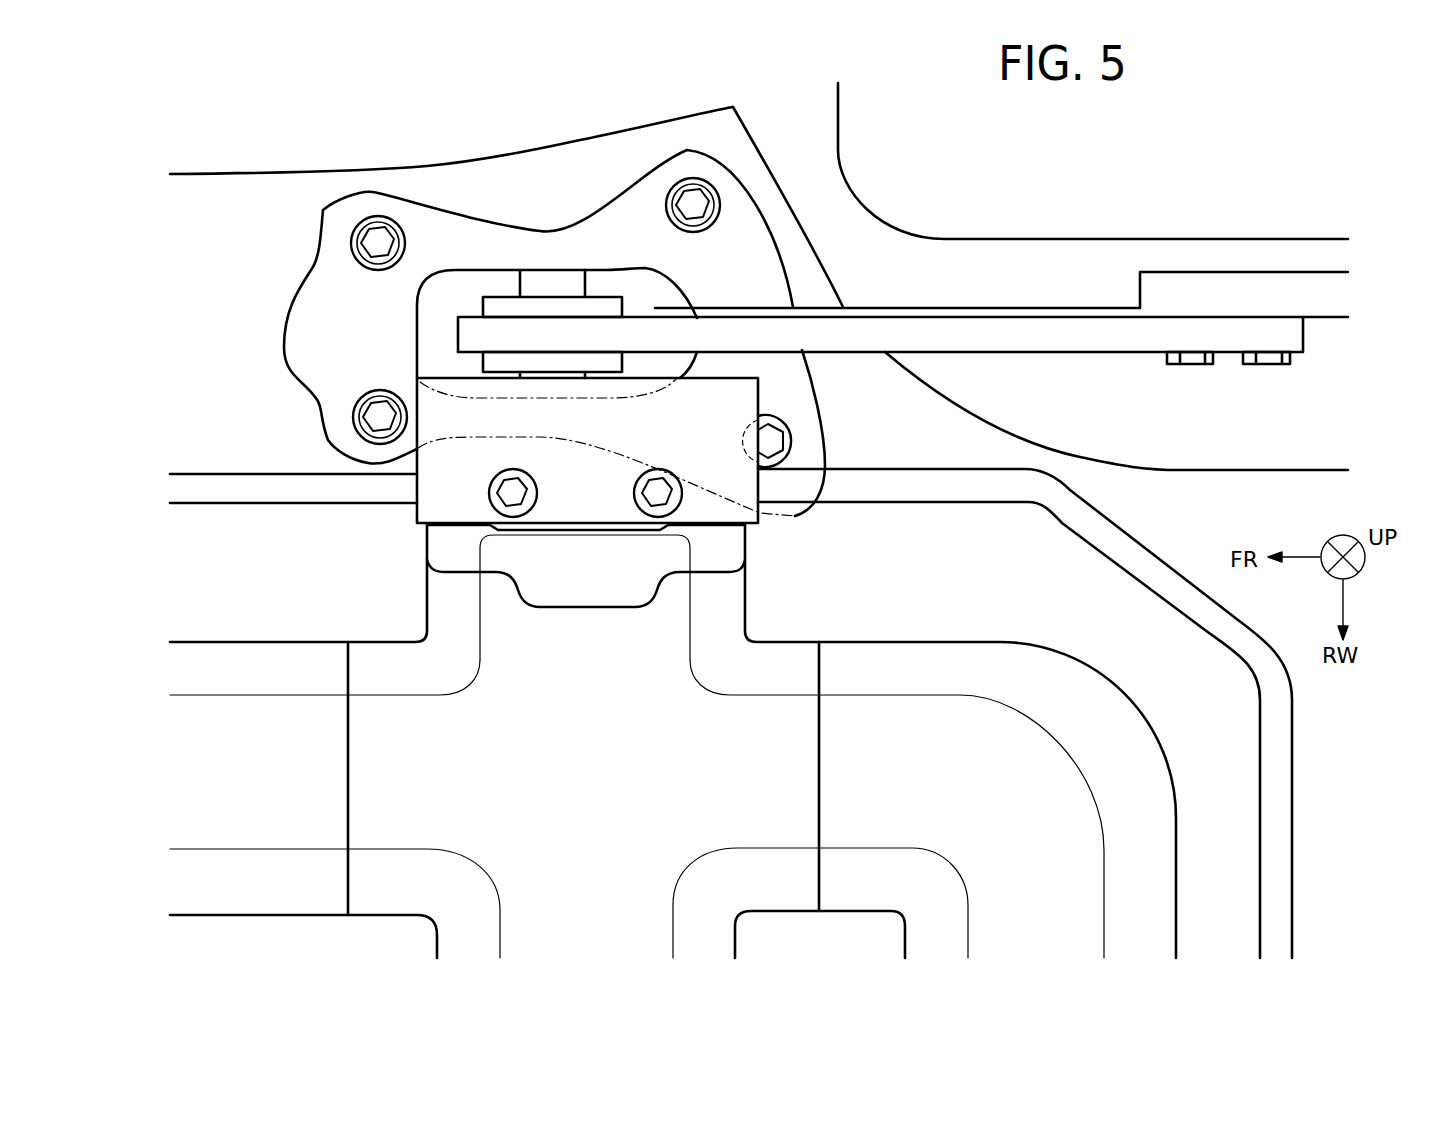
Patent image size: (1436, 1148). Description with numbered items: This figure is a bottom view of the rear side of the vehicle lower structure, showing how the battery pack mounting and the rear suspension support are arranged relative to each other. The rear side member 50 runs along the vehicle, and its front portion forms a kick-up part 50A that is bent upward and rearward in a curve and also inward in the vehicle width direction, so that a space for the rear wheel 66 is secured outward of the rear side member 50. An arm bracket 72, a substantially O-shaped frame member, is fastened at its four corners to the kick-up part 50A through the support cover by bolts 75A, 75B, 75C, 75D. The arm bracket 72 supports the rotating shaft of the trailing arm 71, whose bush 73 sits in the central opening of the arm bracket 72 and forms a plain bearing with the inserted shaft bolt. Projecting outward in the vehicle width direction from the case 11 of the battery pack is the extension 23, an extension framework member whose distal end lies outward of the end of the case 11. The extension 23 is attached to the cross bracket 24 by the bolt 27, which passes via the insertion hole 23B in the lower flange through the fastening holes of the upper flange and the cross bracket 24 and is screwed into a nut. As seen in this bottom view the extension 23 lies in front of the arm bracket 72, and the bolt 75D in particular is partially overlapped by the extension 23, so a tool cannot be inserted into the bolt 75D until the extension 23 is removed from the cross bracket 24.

The case 11 is at (1298, 830).
The extension 23 is at (437, 485).
The insertion hole 23B is at (538, 493).
The cross bracket 24 is at (463, 562).
The bolt 27 is at (523, 512).
The rear side member 50 is at (451, 140).
The kick-up part 50A is at (205, 174).
The rear wheel 66 is at (834, 137).
The trailing arm 71 is at (1052, 352).
The arm bracket 72 is at (457, 213).
The bush 73 is at (498, 296).
The bolt 75A is at (683, 209).
The bolt 75B is at (365, 249).
The bolt 75C is at (370, 418).
The bolt 75D is at (782, 447).